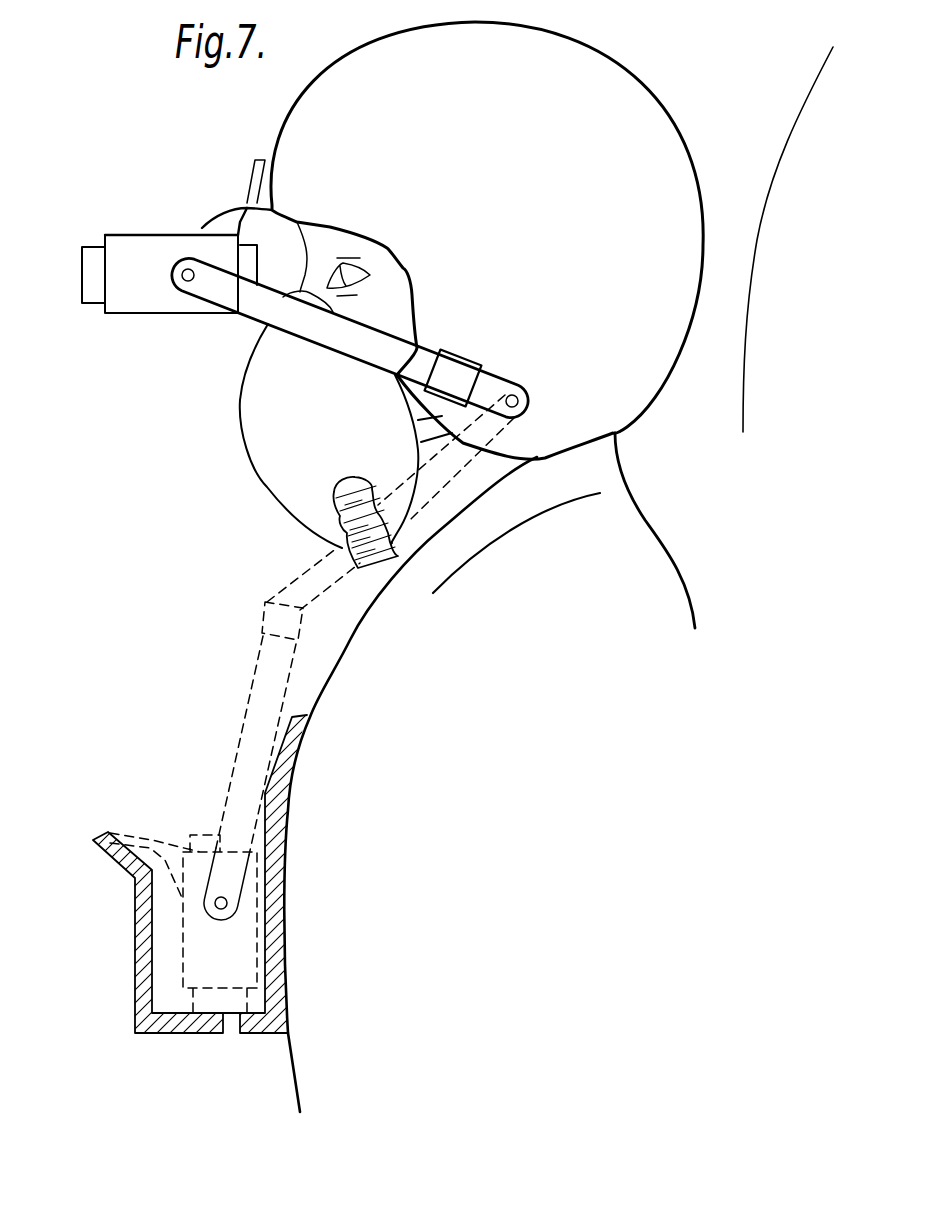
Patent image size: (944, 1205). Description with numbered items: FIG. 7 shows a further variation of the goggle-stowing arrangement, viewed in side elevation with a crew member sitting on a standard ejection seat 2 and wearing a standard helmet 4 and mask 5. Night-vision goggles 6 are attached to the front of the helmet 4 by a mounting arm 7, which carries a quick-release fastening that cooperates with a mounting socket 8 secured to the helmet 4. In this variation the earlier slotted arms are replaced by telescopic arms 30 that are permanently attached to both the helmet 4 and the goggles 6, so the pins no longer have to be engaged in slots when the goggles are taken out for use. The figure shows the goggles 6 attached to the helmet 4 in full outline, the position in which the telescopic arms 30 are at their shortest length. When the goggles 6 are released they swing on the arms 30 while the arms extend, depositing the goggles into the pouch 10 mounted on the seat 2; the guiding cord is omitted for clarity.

The ejection seat 2 is at (802, 133).
The helmet 4 is at (601, 77).
The mask 5 is at (263, 442).
The night-vision goggles 6 is at (145, 247).
The mounting arm 7 is at (203, 228).
The mounting socket 8 is at (260, 188).
The pouch 10 is at (143, 933).
The telescopic arms 30 is at (227, 287).